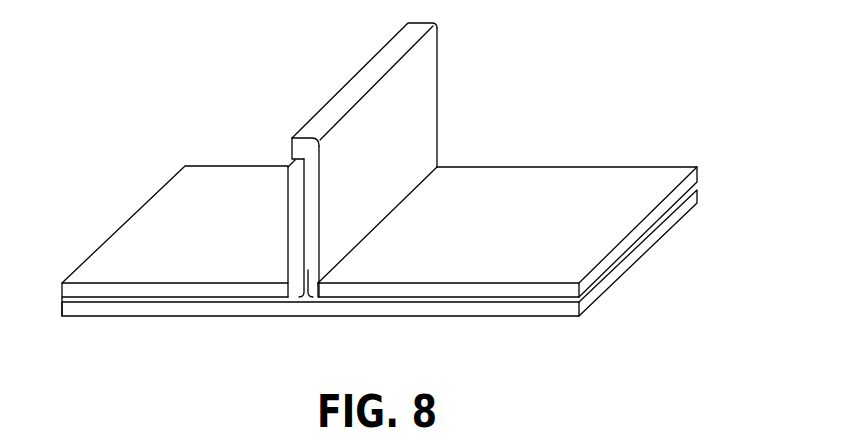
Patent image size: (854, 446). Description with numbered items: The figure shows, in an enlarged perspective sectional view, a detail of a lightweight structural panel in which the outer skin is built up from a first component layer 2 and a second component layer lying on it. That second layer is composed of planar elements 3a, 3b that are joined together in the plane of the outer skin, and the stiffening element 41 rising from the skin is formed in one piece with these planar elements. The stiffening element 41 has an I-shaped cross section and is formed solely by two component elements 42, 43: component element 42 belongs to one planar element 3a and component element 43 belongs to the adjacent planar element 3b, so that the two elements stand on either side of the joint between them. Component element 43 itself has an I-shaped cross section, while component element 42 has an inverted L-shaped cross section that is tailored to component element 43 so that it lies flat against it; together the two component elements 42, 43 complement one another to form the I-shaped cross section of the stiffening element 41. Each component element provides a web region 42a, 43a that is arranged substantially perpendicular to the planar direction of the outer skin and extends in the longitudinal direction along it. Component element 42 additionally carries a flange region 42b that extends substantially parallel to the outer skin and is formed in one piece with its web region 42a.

The first component layer 2 is at (502, 310).
The planar element 3a is at (653, 183).
The planar element 3b is at (203, 180).
The stiffening element 41 is at (321, 148).
The component element 42 is at (424, 153).
The web region 42a is at (412, 158).
The flange region 42b is at (368, 75).
The component element 43 is at (275, 206).
The web region 43a is at (290, 245).